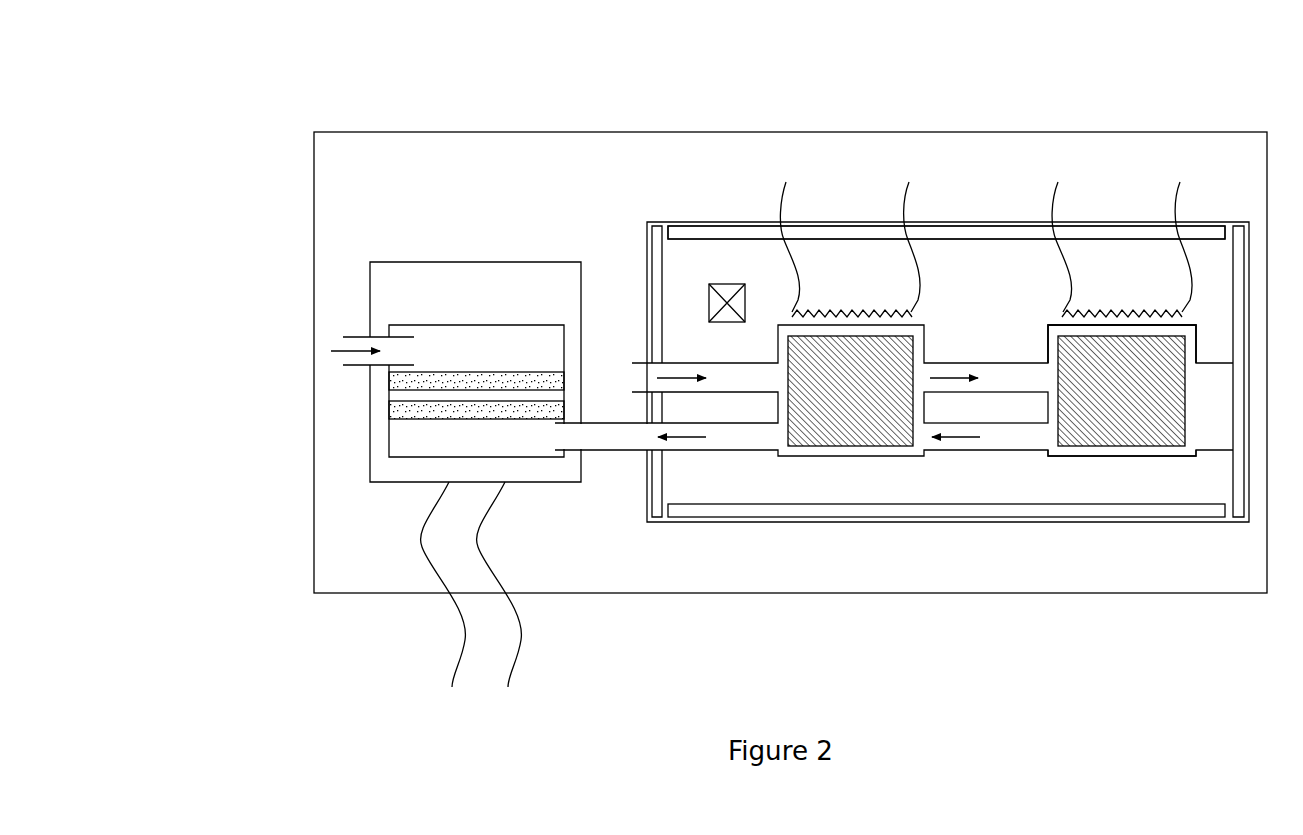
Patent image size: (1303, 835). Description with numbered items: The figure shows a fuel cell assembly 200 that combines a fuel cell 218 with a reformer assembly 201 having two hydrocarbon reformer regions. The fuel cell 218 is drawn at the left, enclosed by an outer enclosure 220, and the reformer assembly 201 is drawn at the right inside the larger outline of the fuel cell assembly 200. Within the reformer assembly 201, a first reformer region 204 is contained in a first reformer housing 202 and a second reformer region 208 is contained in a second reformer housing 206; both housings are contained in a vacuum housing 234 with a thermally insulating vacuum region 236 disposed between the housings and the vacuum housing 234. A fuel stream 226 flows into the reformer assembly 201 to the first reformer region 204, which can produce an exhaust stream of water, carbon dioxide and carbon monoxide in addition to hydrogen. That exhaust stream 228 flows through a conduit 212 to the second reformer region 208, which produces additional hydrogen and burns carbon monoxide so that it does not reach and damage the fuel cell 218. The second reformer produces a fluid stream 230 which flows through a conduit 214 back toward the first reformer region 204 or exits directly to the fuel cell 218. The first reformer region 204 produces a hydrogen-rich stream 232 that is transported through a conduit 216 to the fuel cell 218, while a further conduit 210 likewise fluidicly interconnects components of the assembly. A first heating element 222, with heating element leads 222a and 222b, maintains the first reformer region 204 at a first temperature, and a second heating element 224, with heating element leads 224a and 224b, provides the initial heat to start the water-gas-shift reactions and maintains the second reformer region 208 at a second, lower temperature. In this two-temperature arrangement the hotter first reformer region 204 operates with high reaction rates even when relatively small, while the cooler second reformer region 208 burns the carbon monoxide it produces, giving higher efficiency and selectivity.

The fuel cell assembly 200 is at (372, 86).
The reformer assembly 201 is at (647, 205).
The first reformer housing 202 is at (782, 323).
The first reformer region 204 is at (865, 440).
The second reformer housing 206 is at (1048, 323).
The second reformer region 208 is at (1137, 440).
The conduit 210 is at (752, 377).
The conduit 212 is at (1036, 372).
The conduit 214 is at (1026, 440).
The conduit 216 is at (750, 440).
The fuel cell 218 is at (490, 325).
The filter housing 220 is at (490, 260).
The first heating element 222 is at (878, 310).
The heating element lead 222a is at (787, 182).
The heating element lead 222b is at (910, 182).
The second heating element 224 is at (1150, 310).
The heating element lead 224a is at (1059, 182).
The heating element lead 224b is at (1181, 182).
The fuel stream 226 is at (680, 376).
The exhaust stream 228 is at (953, 374).
The fluid stream 230 is at (955, 440).
The hydrogen-rich stream 232 is at (683, 437).
The vacuum housing 234 is at (1198, 222).
The vacuum region 236 is at (952, 288).